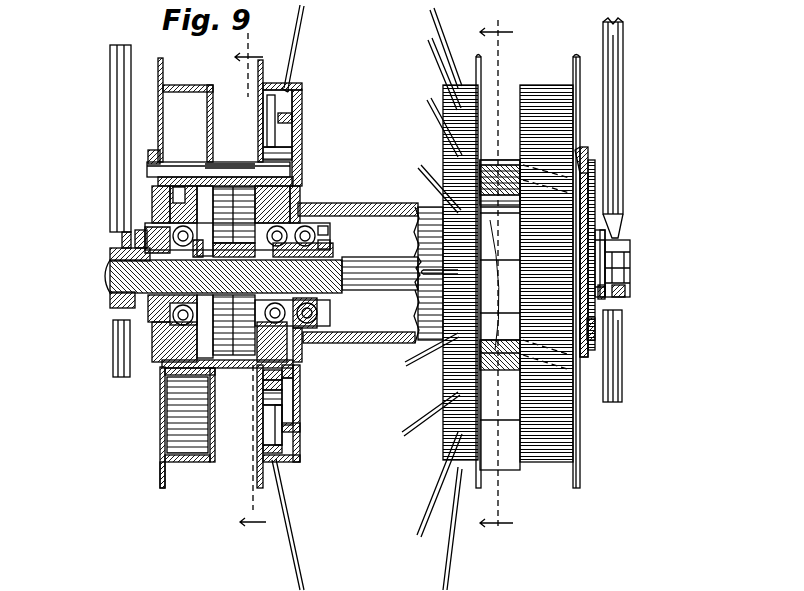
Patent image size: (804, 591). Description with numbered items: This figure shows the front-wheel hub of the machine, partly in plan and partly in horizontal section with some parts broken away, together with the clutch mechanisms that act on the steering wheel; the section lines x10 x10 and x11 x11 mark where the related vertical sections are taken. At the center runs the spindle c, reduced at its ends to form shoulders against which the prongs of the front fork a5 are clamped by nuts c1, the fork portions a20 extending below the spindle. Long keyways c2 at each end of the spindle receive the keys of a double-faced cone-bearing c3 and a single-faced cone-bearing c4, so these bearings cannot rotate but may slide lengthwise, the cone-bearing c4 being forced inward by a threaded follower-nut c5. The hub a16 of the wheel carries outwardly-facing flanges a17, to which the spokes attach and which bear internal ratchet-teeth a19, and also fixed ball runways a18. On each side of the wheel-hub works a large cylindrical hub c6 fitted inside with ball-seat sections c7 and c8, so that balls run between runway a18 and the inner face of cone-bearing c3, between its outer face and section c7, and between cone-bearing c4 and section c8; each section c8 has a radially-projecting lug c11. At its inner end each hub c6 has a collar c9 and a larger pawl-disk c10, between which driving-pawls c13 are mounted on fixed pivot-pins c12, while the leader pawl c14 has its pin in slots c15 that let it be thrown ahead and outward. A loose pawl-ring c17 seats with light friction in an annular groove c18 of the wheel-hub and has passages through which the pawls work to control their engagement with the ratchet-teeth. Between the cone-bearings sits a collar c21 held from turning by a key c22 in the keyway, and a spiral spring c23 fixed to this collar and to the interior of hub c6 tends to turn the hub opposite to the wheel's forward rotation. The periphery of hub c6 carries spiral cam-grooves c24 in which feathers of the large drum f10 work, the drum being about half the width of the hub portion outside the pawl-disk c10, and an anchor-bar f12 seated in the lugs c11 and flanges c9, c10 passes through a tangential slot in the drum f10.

The front fork a5 is at (110, 88).
The radially-projecting lug or ear c11 is at (157, 150).
The anchor-bar f12 is at (208, 164).
The spiral spring c23 is at (240, 200).
The key c22 is at (167, 203).
The ball-bearing section c8 is at (125, 237).
The single-faced cone-bearing c4 is at (110, 250).
The nut c1 is at (117, 302).
The rim flange a20 is at (123, 350).
The follower-nut c5 is at (160, 392).
The collar c21 is at (198, 378).
The large drum f10 is at (192, 463).
The outwardly-facing annular flange a17 is at (455, 370).
The internal ratchet-teeth a19 is at (258, 96).
The flange or pawl-disk c10 is at (270, 70).
The pawl-ring c17 is at (302, 110).
The annular grooved seat c18 is at (296, 126).
The driving-pawl c13 is at (292, 118).
The collar or annular flange c9 is at (292, 132).
The pivot-pin c12 is at (292, 153).
The ball-seat section c7 is at (300, 398).
The leader pawl c14 is at (263, 376).
The cylindrical hub-section c6 is at (265, 393).
The slot c15 is at (272, 407).
The hub a16 is at (380, 203).
The fixed annular ball bearing or runway a18 is at (323, 308).
The groove or keyway c2 is at (328, 233).
The double-faced cone-bearing c3 is at (330, 246).
The spindle c is at (366, 268).
The peripheral cam-groove c24 is at (505, 205).
The section line x10 x10 is at (247, 279).
The section line x11 x11 is at (496, 278).